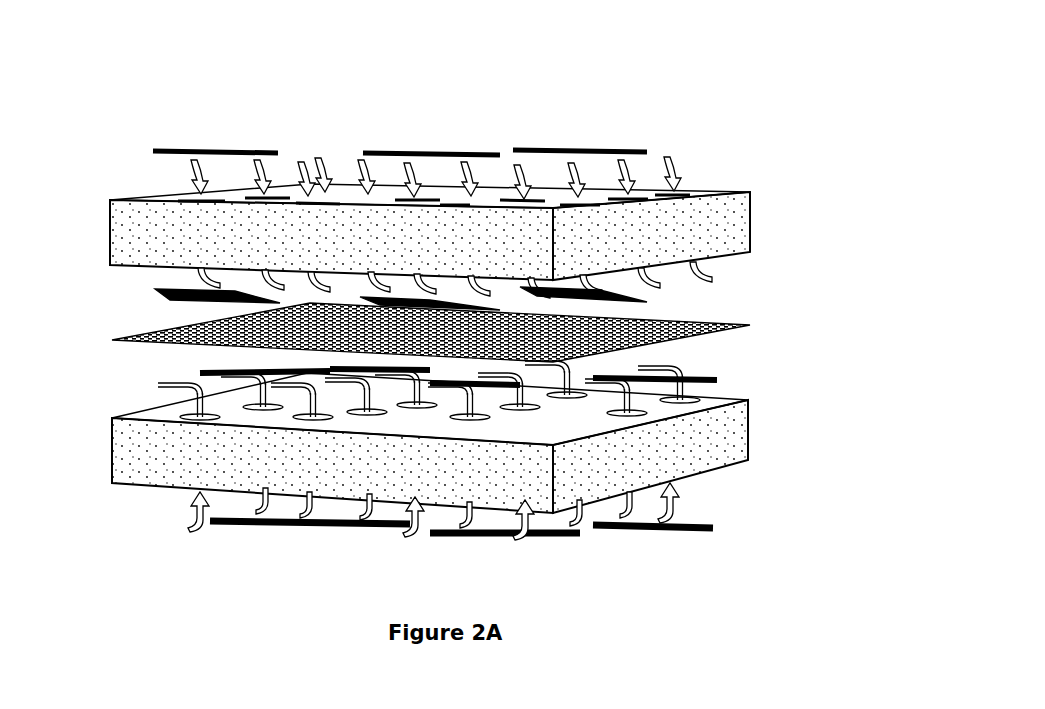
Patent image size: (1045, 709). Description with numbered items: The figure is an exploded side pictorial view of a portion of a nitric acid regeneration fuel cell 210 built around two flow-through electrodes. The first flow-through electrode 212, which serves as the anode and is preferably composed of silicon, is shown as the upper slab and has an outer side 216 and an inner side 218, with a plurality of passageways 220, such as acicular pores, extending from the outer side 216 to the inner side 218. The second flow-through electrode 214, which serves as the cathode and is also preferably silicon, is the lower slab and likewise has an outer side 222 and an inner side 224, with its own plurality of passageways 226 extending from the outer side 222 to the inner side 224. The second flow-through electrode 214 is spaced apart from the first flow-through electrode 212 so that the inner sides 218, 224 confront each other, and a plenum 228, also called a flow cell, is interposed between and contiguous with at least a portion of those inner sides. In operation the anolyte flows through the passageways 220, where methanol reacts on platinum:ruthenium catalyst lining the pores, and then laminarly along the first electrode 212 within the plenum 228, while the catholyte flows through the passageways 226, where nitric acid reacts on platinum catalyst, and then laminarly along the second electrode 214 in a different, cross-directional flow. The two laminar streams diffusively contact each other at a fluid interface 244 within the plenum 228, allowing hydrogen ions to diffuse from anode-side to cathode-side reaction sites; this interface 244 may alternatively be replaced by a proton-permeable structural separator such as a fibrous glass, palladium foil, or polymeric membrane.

The electrochemical cell assembly 210 is at (553, 63).
The first flow-through electrode 212 is at (102, 207).
The second flow-through electrode 214 is at (101, 454).
The outer side 216 is at (707, 192).
The inner side 218 is at (702, 261).
The passageways 220 is at (333, 188).
The outer side 222 is at (138, 486).
The inner side 224 is at (165, 416).
The passageways 226 is at (700, 397).
The plenum 228 is at (106, 417).
The fluid interface 244 is at (705, 322).